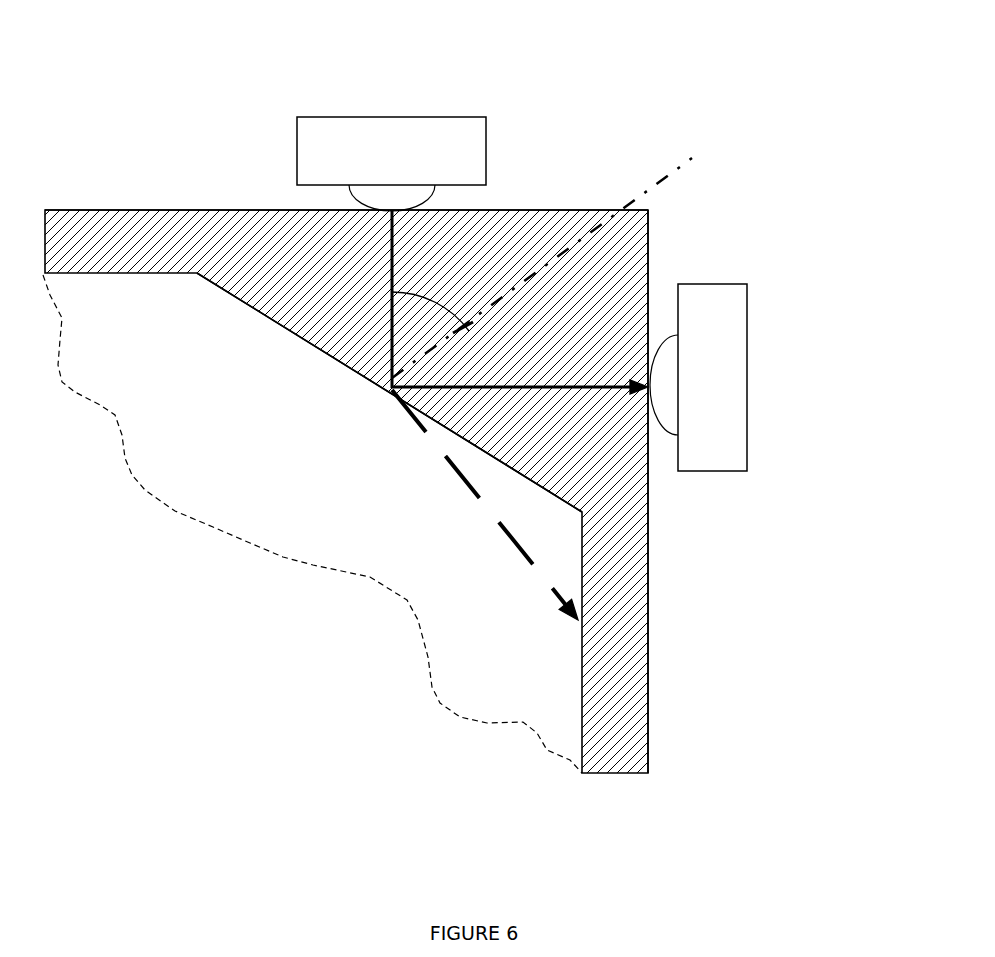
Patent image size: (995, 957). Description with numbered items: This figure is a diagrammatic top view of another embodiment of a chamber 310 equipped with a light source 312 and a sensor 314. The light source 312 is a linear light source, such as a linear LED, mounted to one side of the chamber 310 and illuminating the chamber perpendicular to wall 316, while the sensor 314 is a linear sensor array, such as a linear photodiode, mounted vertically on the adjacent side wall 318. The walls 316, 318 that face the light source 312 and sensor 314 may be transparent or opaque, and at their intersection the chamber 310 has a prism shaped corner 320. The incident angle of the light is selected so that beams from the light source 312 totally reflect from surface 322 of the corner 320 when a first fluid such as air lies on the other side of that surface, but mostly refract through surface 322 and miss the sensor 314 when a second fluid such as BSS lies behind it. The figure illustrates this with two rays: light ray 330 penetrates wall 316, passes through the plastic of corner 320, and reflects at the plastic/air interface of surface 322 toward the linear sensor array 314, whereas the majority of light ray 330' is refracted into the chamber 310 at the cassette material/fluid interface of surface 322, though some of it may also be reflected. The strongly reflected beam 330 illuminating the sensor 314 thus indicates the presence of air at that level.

The chamber 310 is at (312, 524).
The light source 312 is at (366, 103).
The sensor 314 is at (758, 308).
The wall 316 is at (208, 196).
The wall 318 is at (666, 540).
The prism shaped corner 320 is at (556, 200).
The surface 322 is at (289, 346).
The light ray 330 is at (520, 360).
The light ray 330' is at (485, 515).